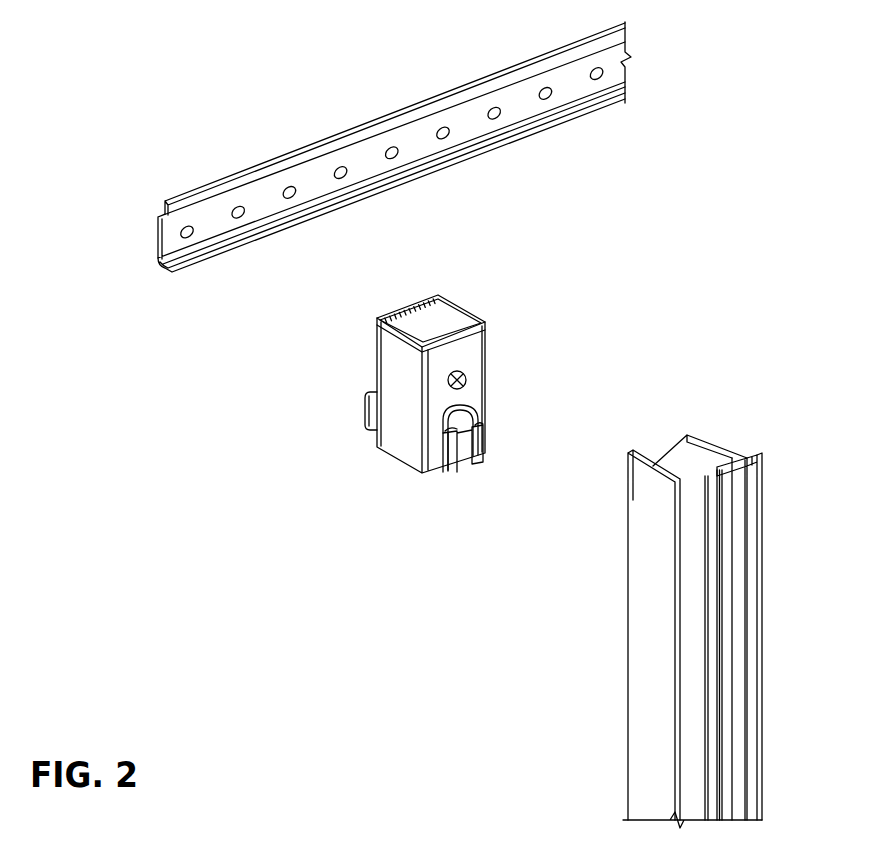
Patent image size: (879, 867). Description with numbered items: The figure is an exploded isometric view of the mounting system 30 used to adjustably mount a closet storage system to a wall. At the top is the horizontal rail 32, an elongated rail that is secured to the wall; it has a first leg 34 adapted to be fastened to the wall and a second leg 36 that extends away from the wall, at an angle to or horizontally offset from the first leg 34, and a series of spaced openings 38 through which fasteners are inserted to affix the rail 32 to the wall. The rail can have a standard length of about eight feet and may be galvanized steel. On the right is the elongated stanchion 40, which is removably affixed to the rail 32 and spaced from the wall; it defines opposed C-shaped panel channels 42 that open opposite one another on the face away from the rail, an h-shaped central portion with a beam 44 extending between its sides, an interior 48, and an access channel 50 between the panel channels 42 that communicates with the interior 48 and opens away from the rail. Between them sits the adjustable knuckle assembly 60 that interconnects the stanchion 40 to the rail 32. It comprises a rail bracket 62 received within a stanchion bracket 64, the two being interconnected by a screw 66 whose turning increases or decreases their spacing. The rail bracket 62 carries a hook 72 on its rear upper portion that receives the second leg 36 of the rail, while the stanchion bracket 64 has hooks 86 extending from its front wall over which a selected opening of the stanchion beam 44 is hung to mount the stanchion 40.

The mounting system 30 is at (776, 233).
The horizontal rail 32 is at (374, 163).
The first leg 34 is at (158, 243).
The second leg 36 is at (225, 178).
The spaced openings 38 is at (339, 168).
The stanchion 40 is at (697, 597).
The panel channels 42 is at (732, 476).
The beam 44 is at (675, 455).
The interior 48 is at (697, 468).
The access channel 50 is at (738, 529).
The knuckle assembly 60 is at (404, 392).
The rail bracket 62 is at (366, 413).
The stanchion bracket 64 is at (462, 304).
The screw 66 is at (463, 375).
The hook 72 is at (375, 333).
The hooks 86 is at (483, 462).